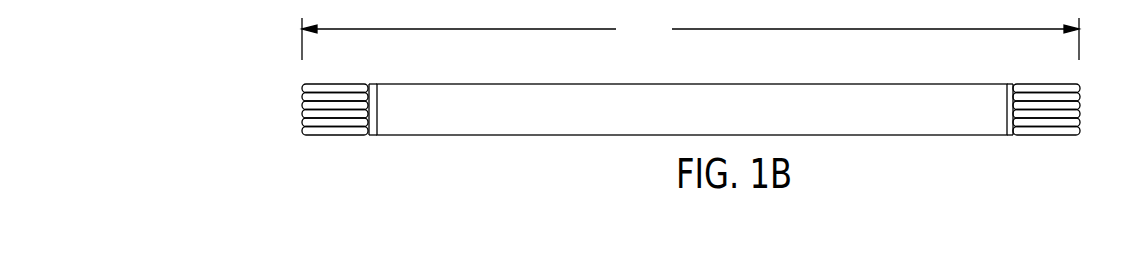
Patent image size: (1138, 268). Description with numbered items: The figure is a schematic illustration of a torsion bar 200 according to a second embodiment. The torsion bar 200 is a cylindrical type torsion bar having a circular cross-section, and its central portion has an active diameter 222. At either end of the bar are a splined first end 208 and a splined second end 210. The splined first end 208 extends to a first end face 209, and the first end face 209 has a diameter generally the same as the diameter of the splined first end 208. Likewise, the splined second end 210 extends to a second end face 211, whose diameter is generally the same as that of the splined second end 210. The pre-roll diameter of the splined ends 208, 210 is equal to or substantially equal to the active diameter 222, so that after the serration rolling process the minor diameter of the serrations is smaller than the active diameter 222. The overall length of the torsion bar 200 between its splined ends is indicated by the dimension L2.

The torsion bar 200 is at (234, 67).
The active diameter 222 is at (707, 85).
The splined first end 208 is at (308, 146).
The first end face 209 is at (302, 112).
The splined second end 210 is at (1073, 146).
The second end face 211 is at (1080, 110).
The length L2 is at (690, 38).